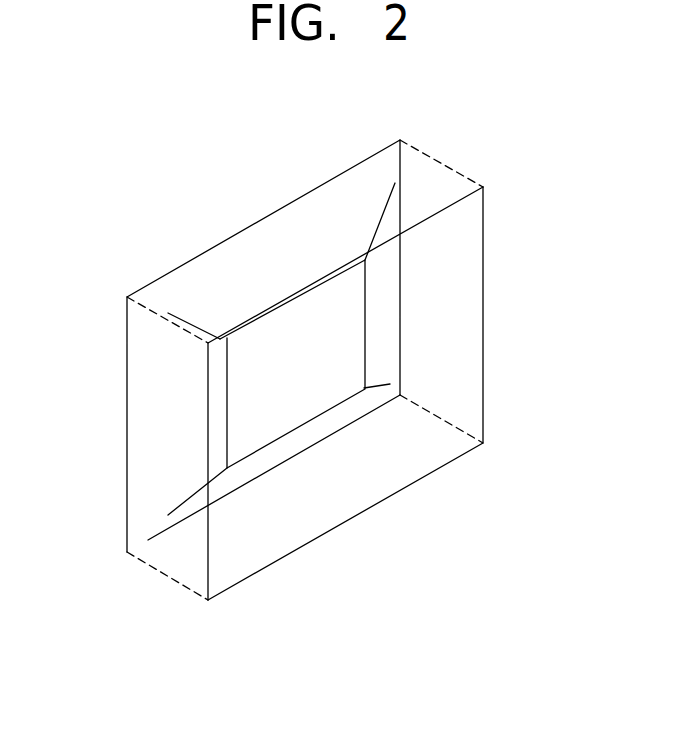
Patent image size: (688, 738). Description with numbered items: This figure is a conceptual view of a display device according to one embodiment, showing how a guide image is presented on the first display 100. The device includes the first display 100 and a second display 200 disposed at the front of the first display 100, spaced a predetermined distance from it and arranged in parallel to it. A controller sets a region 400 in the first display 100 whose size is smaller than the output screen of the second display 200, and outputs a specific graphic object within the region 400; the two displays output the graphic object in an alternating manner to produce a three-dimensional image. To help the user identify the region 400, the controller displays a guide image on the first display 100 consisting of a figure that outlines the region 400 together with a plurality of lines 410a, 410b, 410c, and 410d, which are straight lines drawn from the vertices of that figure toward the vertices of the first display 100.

The first display 100 is at (257, 231).
The second display 200 is at (338, 512).
The region 400 is at (355, 327).
The line 410a is at (380, 220).
The line 410b is at (391, 384).
The line 410c is at (192, 494).
The line 410d is at (197, 327).